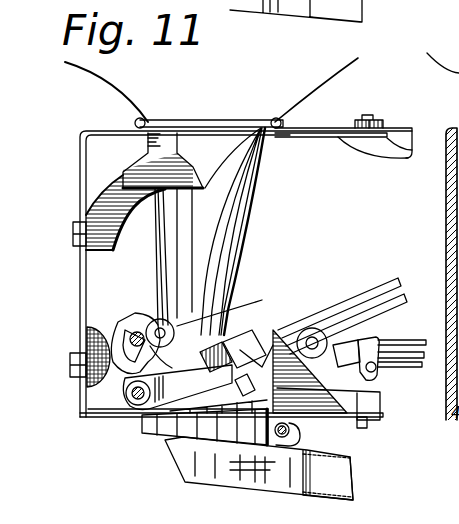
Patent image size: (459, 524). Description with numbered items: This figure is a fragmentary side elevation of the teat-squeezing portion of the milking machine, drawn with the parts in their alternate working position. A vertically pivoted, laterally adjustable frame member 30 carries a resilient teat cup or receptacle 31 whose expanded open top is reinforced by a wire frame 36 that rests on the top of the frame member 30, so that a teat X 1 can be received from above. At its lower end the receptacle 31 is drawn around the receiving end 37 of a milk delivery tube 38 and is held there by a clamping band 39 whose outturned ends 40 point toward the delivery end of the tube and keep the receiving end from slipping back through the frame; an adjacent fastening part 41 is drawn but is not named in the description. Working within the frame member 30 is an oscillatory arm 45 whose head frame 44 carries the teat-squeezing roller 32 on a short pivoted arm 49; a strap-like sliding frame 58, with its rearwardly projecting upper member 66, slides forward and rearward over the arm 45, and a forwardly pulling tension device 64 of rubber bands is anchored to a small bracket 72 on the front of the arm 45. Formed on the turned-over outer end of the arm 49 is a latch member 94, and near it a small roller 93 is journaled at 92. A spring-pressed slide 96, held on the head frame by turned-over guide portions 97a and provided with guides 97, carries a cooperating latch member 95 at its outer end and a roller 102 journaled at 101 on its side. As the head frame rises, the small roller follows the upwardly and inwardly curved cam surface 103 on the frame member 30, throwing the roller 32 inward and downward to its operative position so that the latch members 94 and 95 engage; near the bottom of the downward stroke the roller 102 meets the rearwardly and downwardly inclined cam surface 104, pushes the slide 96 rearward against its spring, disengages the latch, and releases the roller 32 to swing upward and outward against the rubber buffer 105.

The teat 1 is at (260, 81).
The frame member 30 is at (71, 288).
The teat receptacle 31 is at (243, 235).
The teat-squeezing roller 32 is at (120, 318).
The wire frame 36 is at (195, 121).
The receiving end of milk delivery tube 37 is at (206, 431).
The milk delivery tube 38 is at (340, 481).
The clamping band 39 is at (205, 427).
The outturned end of clamping band 40 is at (291, 431).
The washer 41 is at (298, 442).
The head frame 44 is at (289, 318).
The oscillatory arm 45 is at (385, 360).
The short pivoted arm 49 is at (130, 392).
The sliding frame 58 is at (376, 278).
The tension device 64 is at (425, 341).
The upper sliding member 66 is at (372, 289).
The small bracket 72 is at (402, 335).
The roller journal 92 is at (167, 321).
The small roller 93 is at (177, 326).
The latch member 94 is at (140, 321).
The cooperating latch member 95 is at (216, 381).
The spring-pressed slide 96 is at (292, 322).
The guide 97 is at (327, 313).
The turned-over guide portion 97a is at (243, 323).
The roller journal on slide 101 is at (378, 273).
The roller 102 is at (347, 323).
The curved cam surface 103 is at (85, 224).
The inclined cam surface 104 is at (335, 388).
The rubber buffer 105 is at (92, 380).